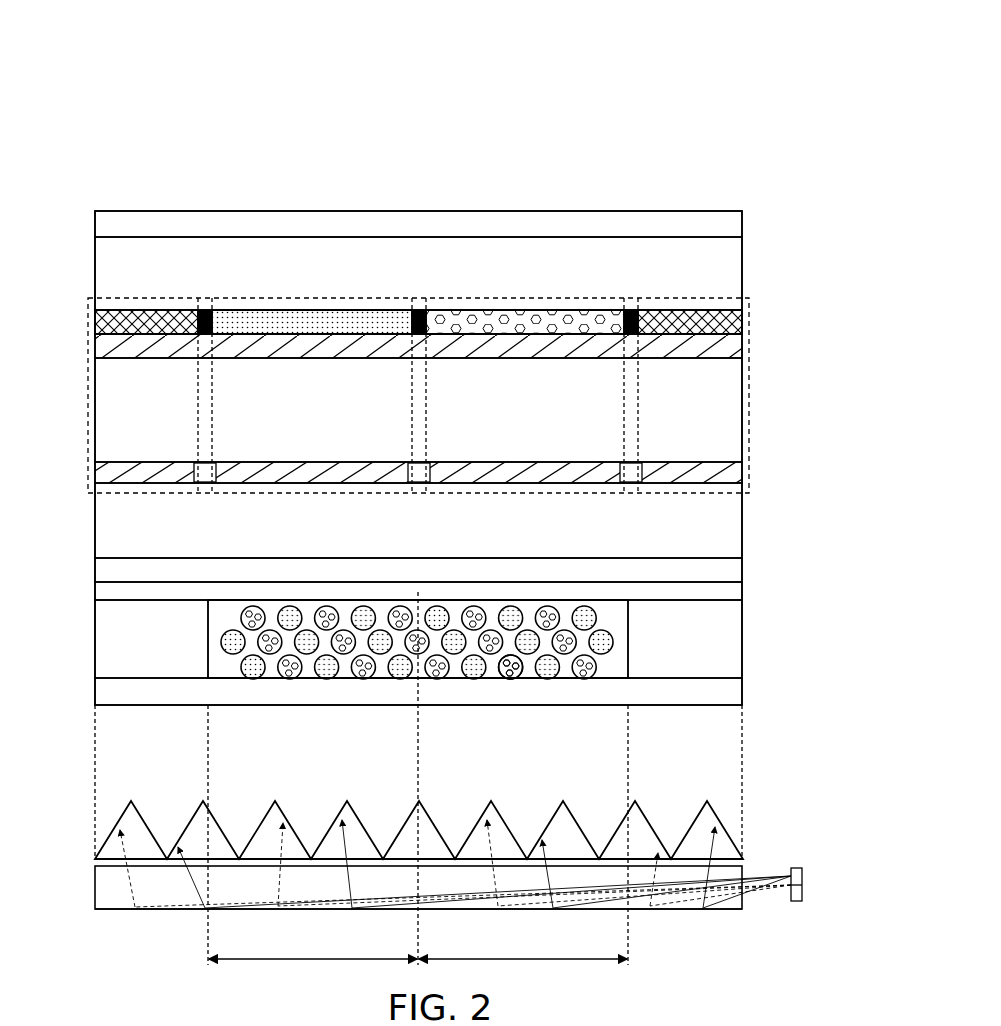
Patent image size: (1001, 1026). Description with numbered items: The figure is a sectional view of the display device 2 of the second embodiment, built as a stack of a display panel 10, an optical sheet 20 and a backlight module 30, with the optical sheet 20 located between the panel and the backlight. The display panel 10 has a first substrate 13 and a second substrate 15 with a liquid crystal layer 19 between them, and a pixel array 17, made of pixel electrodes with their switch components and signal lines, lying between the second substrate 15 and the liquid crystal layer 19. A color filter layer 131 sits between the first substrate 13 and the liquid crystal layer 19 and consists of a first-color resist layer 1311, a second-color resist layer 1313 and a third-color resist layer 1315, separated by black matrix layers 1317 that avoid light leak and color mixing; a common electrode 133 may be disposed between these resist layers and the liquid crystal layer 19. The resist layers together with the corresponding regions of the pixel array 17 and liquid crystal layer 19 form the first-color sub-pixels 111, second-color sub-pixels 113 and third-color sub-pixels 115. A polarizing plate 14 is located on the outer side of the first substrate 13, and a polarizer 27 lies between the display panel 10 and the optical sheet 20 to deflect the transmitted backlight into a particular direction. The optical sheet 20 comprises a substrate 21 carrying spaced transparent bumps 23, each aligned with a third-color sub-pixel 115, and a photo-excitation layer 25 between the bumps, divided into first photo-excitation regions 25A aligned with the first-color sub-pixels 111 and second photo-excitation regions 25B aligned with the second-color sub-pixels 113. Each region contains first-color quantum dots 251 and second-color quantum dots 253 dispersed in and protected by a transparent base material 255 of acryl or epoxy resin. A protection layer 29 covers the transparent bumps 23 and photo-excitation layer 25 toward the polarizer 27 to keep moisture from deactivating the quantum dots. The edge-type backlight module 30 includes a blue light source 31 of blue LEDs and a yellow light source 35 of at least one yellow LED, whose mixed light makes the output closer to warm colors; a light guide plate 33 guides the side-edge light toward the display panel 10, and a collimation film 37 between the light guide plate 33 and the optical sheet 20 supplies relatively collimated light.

The display device 2 is at (42, 92).
The display panel 10 is at (85, 235).
The first substrate 13 is at (725, 274).
The polarizing plate 14 is at (725, 226).
The second substrate 15 is at (725, 524).
The pixel array 17 is at (725, 473).
The liquid crystal layer 19 is at (725, 384).
The optical sheet 20 is at (85, 583).
The substrate 21 is at (725, 692).
The transparent bumps 23 is at (725, 656).
The photo-excitation layer 25 is at (630, 633).
The first photo-excitation regions 25A is at (313, 948).
The second photo-excitation regions 25B is at (523, 948).
The polarizer 27 is at (725, 570).
The protection layer 29 is at (725, 596).
The backlight module 30 is at (85, 800).
The blue light source 31 is at (803, 898).
The light guide plate 33 is at (728, 906).
The yellow light source 35 is at (803, 872).
The collimation film 37 is at (725, 843).
The first-color sub-pixels 111 is at (314, 298).
The second-color sub-pixels 113 is at (522, 298).
The third-color sub-pixels 115 is at (131, 298).
The color filter layer 131 is at (725, 318).
The common electrode 133 is at (725, 346).
The first-color quantum dots 251 is at (474, 672).
The second-color quantum dots 253 is at (512, 672).
The transparent base material 255 is at (610, 668).
The first-color resist layer 1311 is at (265, 322).
The second-color resist layer 1313 is at (478, 322).
The third-color resist layer 1315 is at (160, 322).
The black matrix layers 1317 is at (205, 318).